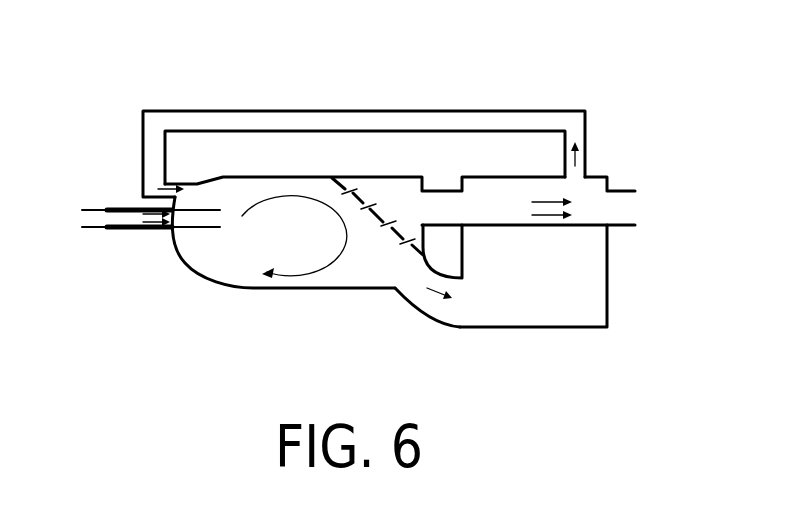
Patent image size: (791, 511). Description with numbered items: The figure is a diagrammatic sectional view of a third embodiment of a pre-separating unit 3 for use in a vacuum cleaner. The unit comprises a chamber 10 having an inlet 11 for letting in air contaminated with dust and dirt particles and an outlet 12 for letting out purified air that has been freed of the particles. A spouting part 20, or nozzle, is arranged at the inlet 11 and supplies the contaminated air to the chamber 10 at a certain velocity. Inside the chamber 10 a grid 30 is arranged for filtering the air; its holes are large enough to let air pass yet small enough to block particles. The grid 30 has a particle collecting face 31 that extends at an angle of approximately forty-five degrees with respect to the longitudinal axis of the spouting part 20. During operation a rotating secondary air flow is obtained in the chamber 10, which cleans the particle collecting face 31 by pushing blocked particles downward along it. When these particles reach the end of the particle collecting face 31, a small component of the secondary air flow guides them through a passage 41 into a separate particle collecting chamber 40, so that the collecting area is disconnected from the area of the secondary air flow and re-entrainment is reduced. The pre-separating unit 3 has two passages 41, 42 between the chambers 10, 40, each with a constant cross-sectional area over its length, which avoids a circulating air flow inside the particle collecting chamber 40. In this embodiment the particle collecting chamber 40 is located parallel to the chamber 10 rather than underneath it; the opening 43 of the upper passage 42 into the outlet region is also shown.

The pre-separating unit 3 is at (668, 82).
The chamber 10 is at (298, 289).
The inlet 11 is at (117, 209).
The outlet 12 is at (633, 227).
The spouting part 20 is at (196, 218).
The grid 30 is at (368, 180).
The particle collecting face 31 is at (398, 233).
The particle collecting chamber 40 is at (577, 317).
The passage 41 is at (432, 308).
The passage 42 is at (295, 112).
The channel inlet opening 43 is at (582, 177).